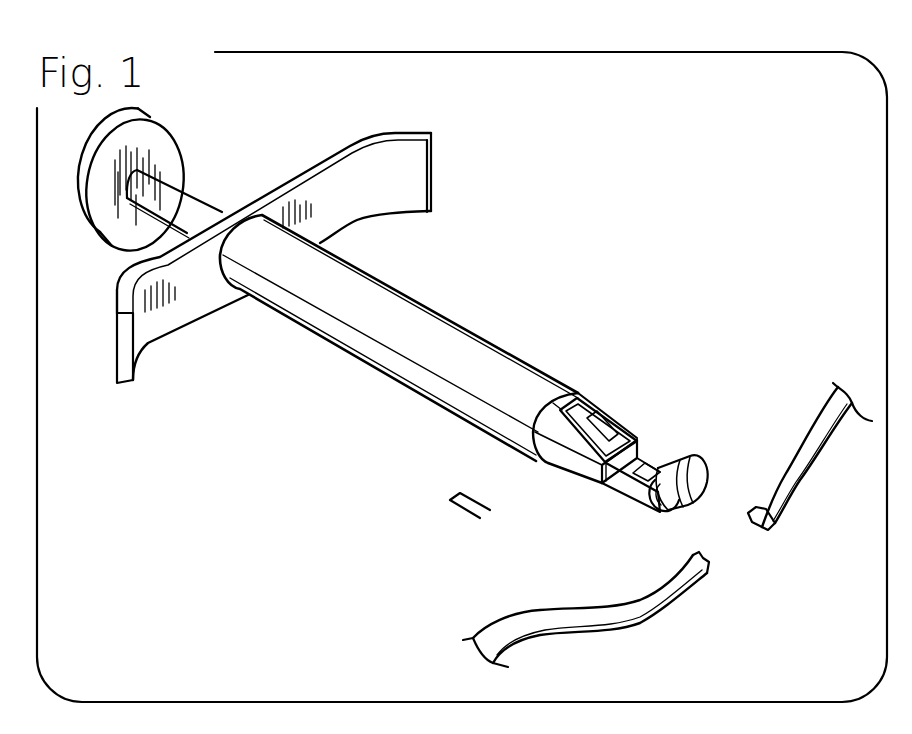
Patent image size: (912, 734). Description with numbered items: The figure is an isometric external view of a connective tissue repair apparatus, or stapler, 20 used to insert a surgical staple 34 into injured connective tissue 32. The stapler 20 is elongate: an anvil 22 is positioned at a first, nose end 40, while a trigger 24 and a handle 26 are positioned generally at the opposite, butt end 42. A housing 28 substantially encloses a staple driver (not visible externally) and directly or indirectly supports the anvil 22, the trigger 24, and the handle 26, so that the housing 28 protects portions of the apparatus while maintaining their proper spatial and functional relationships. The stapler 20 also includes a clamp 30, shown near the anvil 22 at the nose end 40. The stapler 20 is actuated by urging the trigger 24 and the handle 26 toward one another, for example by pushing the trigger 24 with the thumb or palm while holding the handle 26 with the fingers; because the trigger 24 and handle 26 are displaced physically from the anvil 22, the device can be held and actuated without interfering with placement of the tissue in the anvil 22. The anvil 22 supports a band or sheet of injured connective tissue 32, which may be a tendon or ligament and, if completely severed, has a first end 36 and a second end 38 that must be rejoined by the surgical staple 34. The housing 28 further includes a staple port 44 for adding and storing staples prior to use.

The connective tissue repair apparatus 20 is at (668, 203).
The anvil 22 is at (705, 476).
The trigger 24 is at (190, 153).
The handle 26 is at (400, 133).
The housing 28 is at (440, 295).
The clamp 30 is at (648, 460).
The injured connective tissue 32 is at (641, 573).
The surgical staple 34 is at (451, 481).
The first end 36 is at (680, 603).
The second end 38 is at (793, 500).
The nose end 40 is at (683, 395).
The butt end 42 is at (290, 107).
The staple port 44 is at (600, 416).